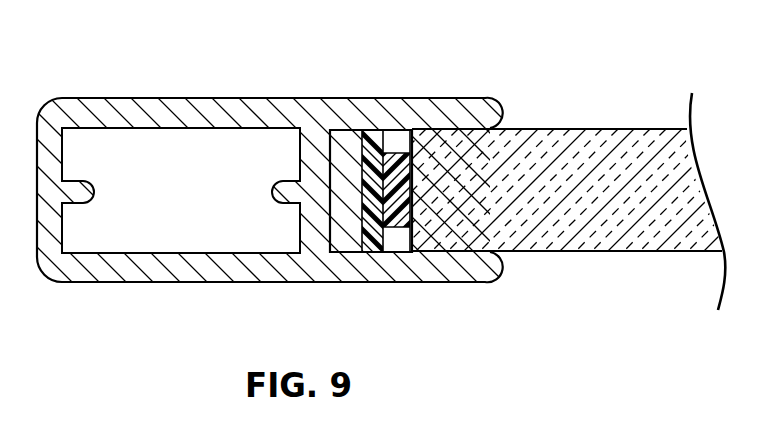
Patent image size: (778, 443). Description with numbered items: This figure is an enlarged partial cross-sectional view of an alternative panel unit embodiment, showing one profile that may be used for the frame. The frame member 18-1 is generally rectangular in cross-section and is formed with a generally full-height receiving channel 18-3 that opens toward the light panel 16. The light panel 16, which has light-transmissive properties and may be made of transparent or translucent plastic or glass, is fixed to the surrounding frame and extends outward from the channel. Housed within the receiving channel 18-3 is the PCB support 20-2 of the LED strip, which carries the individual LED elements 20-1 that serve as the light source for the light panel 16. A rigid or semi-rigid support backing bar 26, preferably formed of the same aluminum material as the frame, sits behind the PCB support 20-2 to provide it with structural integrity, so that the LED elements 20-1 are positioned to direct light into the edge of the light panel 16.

The frame member 18-1 is at (120, 118).
The receiving channel 18-3 is at (454, 231).
The support backing bar 26 is at (347, 165).
The PCB support 20-2 is at (381, 145).
The LED elements 20-1 is at (400, 150).
The light panel 16 is at (604, 181).